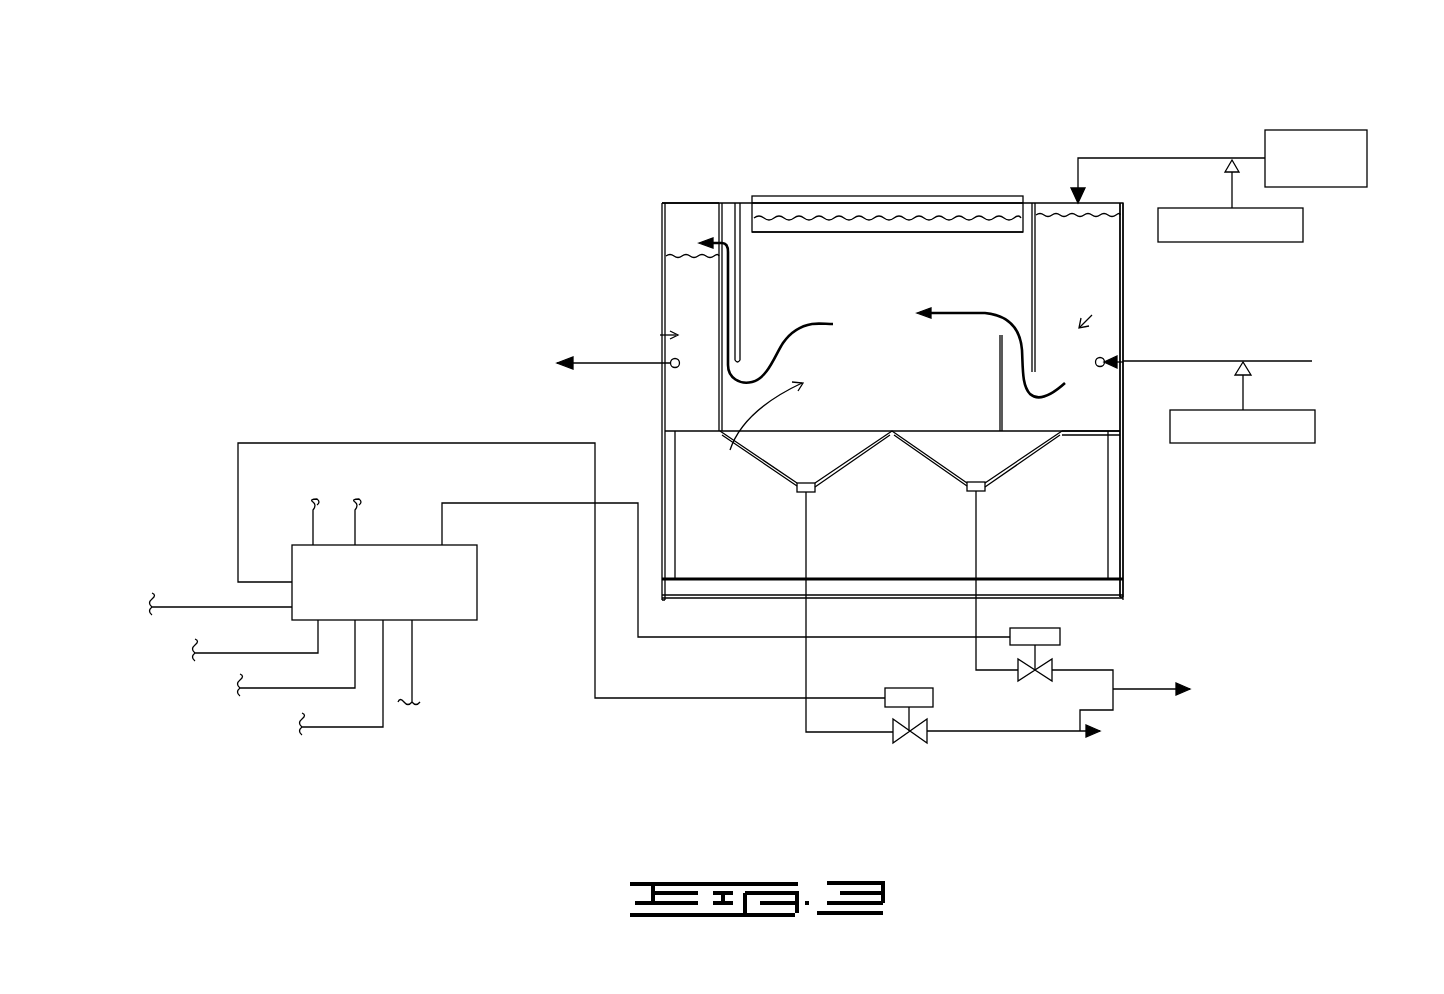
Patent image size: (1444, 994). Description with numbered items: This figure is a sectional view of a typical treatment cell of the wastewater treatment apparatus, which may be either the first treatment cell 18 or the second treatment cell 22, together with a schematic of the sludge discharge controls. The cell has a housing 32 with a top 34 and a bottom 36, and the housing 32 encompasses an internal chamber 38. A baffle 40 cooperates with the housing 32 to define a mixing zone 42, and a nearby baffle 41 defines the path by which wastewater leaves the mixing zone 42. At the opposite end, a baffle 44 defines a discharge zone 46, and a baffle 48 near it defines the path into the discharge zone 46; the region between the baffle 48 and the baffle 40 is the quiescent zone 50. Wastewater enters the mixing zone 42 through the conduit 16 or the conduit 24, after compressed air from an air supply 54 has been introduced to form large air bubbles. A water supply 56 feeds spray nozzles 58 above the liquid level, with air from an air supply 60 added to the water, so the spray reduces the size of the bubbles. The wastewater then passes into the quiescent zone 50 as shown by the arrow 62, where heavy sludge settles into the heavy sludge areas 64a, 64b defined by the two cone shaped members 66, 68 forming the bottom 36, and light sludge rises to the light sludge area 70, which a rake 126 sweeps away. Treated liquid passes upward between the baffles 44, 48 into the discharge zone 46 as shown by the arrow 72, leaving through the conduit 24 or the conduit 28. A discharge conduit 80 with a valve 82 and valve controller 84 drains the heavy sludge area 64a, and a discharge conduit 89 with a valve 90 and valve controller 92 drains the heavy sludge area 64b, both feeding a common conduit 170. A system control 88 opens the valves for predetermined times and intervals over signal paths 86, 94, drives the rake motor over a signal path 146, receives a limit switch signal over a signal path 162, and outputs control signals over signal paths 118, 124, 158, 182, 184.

The conduit 16 is at (1187, 360).
The first treatment cell 18 is at (638, 143).
The second treatment cell 22 is at (693, 195).
The conduit 24 is at (545, 329).
The conduit 28 is at (607, 362).
The housing 32 is at (1128, 278).
The top 34 is at (1125, 201).
The bottom 36 is at (1032, 453).
The internal chamber 38 is at (735, 445).
The baffle 40 is at (1033, 277).
The baffle 41 is at (998, 367).
The mixing zone 42 is at (1085, 323).
The baffle 44 is at (712, 285).
The discharge zone 46 is at (668, 333).
The baffle 48 is at (741, 248).
The quiescent zone 50 is at (857, 260).
The air supply 54 is at (1243, 448).
The water supply 56 is at (1298, 120).
The spray nozzles 58 is at (1073, 198).
The air supply 60 is at (1308, 227).
The arrow 62 is at (973, 311).
The heavy sludge area 64a is at (802, 429).
The heavy sludge area 64b is at (978, 429).
The cone shaped member 66 is at (777, 470).
The cone shaped member 68 is at (936, 462).
The light sludge area 70 is at (833, 232).
The arrow 72 is at (820, 320).
The discharge conduit 80 is at (807, 548).
The valve 82 is at (905, 737).
The valve controller 84 is at (910, 688).
The signal path 86 is at (652, 700).
The system control 88 is at (494, 584).
The discharge conduit 89 is at (978, 548).
The valve 90 is at (1042, 675).
The valve controller 92 is at (1061, 637).
The signal path 94 is at (765, 638).
The signal path 118 is at (358, 528).
The signal path 124 is at (310, 527).
The rake 126 is at (908, 198).
The signal path 146 is at (190, 605).
The signal path 158 is at (217, 655).
The signal path 162 is at (282, 690).
The common conduit 170 is at (1147, 690).
The signal path 182 is at (353, 727).
The signal path 184 is at (415, 660).